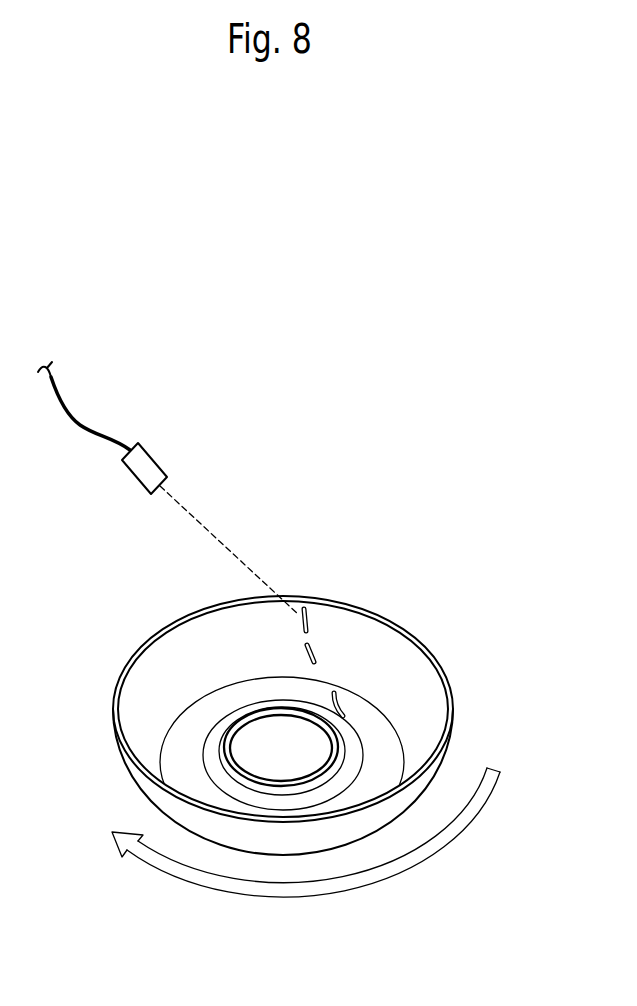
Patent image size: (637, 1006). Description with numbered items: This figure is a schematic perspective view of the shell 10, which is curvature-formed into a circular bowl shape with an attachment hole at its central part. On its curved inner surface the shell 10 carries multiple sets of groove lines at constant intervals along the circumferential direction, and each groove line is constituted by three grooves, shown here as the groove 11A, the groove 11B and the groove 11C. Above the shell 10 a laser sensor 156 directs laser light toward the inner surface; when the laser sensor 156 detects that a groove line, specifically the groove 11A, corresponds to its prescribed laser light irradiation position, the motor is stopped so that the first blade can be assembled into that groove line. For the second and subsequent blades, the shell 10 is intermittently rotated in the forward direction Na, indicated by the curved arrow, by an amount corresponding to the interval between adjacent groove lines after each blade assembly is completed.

The shell 10 is at (120, 676).
The groove 11A is at (306, 617).
The groove 11B is at (316, 648).
The groove 11C is at (343, 705).
The laser sensor 156 is at (156, 460).
The forward direction Na is at (292, 897).